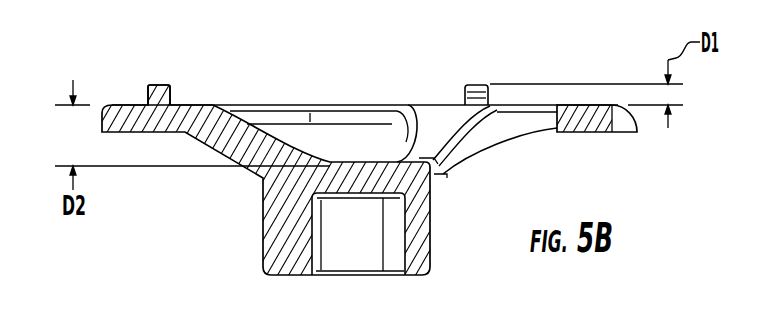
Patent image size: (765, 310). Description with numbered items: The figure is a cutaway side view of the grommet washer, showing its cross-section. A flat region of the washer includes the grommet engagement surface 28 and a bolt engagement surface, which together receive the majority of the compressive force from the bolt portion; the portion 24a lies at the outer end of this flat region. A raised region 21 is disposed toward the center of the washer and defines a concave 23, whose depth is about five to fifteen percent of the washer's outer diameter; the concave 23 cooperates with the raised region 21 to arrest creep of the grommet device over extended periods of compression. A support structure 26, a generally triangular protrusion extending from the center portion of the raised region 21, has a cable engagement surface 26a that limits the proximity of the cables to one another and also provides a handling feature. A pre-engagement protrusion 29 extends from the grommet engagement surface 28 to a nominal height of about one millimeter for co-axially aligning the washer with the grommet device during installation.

The raised region 21 is at (467, 153).
The concave 23 is at (358, 126).
The flange portion 24a is at (590, 127).
The support structure 26 is at (285, 243).
The cable engagement surface 26a is at (431, 217).
The grommet engagement surface 28 is at (192, 105).
The pre-engagement protrusion 29 is at (477, 85).